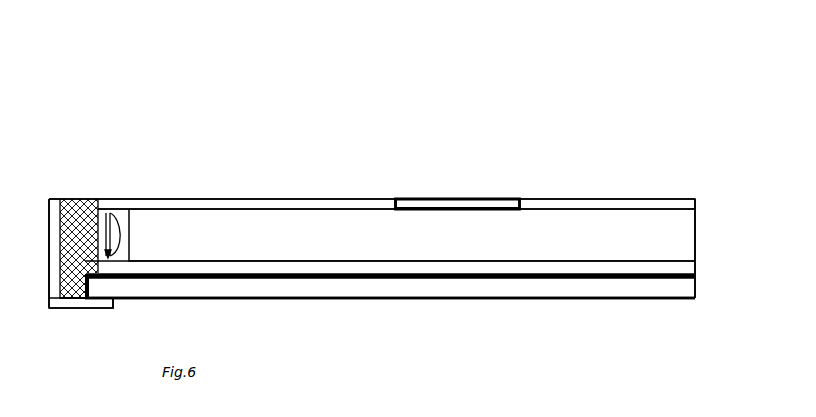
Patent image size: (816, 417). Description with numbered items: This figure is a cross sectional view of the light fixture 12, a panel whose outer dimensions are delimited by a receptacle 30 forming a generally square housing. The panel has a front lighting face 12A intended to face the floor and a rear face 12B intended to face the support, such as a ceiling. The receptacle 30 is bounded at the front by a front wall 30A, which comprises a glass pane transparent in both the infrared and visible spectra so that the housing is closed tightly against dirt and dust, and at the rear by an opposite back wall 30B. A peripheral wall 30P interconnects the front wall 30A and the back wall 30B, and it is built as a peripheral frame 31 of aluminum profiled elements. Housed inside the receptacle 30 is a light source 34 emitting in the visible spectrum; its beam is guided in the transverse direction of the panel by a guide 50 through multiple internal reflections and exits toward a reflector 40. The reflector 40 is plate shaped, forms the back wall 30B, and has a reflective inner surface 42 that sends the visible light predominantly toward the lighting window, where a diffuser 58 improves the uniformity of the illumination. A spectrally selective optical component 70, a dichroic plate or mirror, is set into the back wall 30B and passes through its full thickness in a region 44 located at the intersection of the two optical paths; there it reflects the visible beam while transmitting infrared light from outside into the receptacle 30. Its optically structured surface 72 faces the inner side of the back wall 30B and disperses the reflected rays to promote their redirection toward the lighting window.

The light fixture 12 is at (267, 161).
The front lighting face 12A is at (653, 300).
The rear face 12B is at (562, 198).
The receptacle 30 is at (183, 198).
The front wall 30A is at (461, 297).
The back wall 30B is at (324, 198).
The peripheral wall 30P is at (48, 234).
The peripheral frame 31 is at (58, 277).
The light source 34 is at (113, 210).
The reflector 40 is at (672, 197).
The reflective inner surface 42 is at (588, 229).
The region 44 is at (419, 198).
The guide 50 is at (667, 235).
The diffuser 58 is at (501, 264).
The spectrally selective optical component 70 is at (452, 198).
The optically structured surface 72 is at (432, 211).